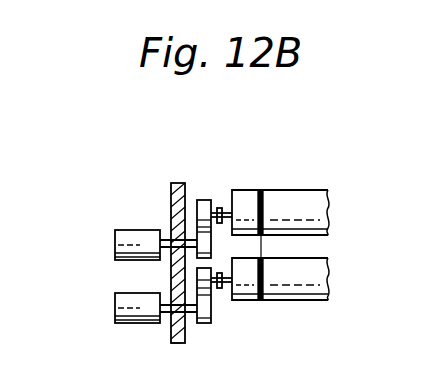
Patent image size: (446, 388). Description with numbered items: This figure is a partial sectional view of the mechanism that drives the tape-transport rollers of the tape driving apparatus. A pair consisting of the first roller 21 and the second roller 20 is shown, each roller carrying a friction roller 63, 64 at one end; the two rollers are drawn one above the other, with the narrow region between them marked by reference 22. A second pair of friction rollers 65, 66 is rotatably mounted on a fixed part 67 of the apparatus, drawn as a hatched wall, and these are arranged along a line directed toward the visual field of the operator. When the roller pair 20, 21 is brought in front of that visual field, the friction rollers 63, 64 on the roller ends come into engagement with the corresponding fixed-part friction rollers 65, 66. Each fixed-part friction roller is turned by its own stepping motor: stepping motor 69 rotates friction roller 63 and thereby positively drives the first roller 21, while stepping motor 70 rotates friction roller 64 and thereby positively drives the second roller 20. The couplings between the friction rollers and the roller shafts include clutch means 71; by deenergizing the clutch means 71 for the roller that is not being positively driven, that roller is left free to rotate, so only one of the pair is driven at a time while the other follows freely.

The second roller 20 is at (298, 198).
The first roller 21 is at (314, 297).
The roller shaft 22 is at (320, 254).
The friction roller 63 is at (202, 280).
The friction roller 64 is at (204, 200).
The friction roller 65 is at (212, 323).
The friction roller 66 is at (200, 235).
The fixed part 67 is at (178, 207).
The stepping motor 69 is at (118, 305).
The stepping motor 70 is at (112, 241).
The clutch means 71 is at (218, 206).